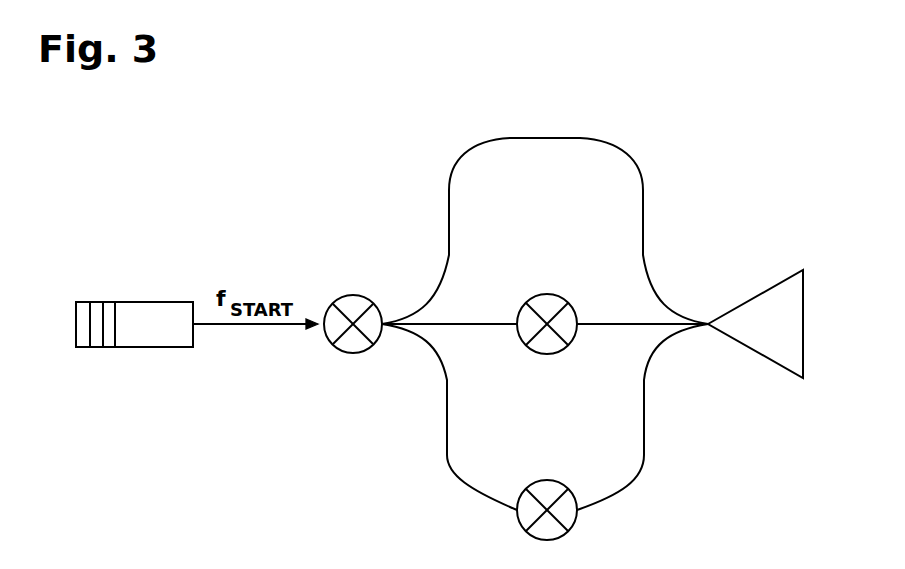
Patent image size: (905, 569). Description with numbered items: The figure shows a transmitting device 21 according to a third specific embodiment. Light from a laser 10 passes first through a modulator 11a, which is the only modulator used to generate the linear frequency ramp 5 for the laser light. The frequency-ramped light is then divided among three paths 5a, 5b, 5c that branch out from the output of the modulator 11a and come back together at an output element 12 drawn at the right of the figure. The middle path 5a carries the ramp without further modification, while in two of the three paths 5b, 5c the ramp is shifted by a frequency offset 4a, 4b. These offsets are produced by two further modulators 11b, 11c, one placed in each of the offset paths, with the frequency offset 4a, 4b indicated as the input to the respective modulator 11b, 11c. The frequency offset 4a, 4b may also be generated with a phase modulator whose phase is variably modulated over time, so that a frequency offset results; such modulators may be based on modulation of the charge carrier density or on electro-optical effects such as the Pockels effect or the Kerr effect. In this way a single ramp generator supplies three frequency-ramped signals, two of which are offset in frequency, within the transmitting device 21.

The laser 10 is at (140, 302).
The frequency ramp 5 is at (353, 294).
The modulator for generating frequency ramps 11a is at (353, 353).
The first path 5a is at (672, 298).
The second path 5b is at (647, 336).
The third path 5c is at (662, 418).
The frequency offset 4a is at (547, 294).
The frequency offset 4b is at (547, 480).
The modulator for generating frequency offset 11b is at (530, 318).
The modulator for generating frequency offset 11c is at (521, 528).
The antenna 12 is at (762, 292).
The transmitting device 21 is at (705, 118).